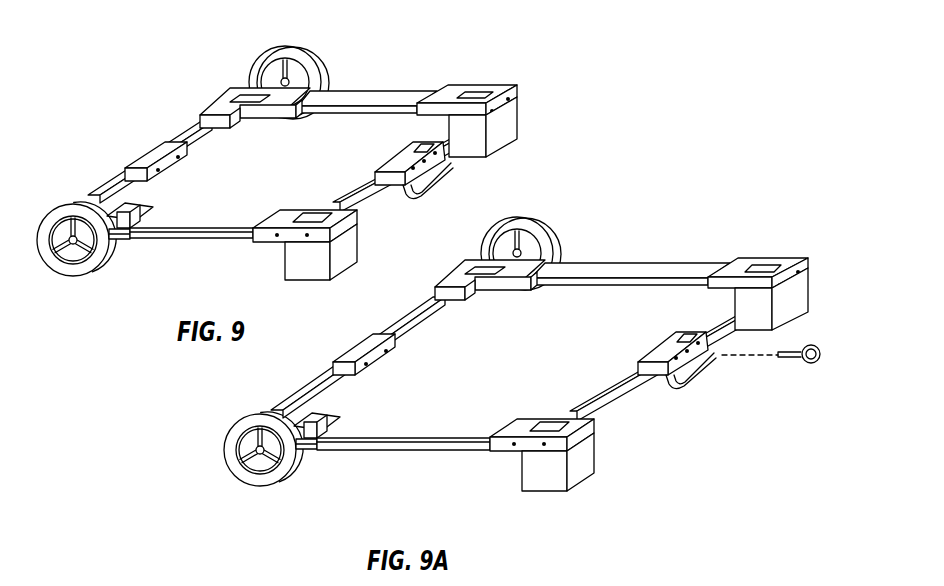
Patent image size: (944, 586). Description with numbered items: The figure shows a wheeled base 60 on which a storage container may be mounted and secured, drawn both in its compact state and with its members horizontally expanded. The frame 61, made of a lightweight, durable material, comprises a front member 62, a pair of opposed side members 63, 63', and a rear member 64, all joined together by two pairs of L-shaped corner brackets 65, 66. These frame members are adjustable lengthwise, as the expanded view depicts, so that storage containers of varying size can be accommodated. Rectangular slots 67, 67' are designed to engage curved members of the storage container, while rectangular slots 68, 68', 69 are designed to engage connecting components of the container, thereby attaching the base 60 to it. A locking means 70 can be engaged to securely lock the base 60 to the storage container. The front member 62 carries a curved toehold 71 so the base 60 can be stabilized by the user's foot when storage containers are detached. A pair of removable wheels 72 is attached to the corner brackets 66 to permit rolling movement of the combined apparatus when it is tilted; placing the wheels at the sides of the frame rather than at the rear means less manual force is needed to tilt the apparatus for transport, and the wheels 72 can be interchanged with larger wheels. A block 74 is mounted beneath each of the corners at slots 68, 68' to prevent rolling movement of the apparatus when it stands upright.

In FIG. 9, the wheeled base 60 is at (160, 118).
In FIG. 9, the frame 61 is at (343, 78).
In FIG. 9, the front member 62 is at (367, 190).
In FIG. 9, the side member 63 is at (191, 208).
In FIG. 9, the side member 63' is at (369, 83).
In FIG. 9, the rear member 64 is at (127, 181).
In FIG. 9, the L-shaped corner bracket 65 is at (497, 87).
In FIG. 9, the L-shaped corner bracket 66 is at (241, 83).
In FIG. 9A, the rectangular slot 67 is at (331, 391).
In FIG. 9A, the rectangular slot 67' is at (568, 258).
In FIG. 9A, the rectangular slot 68 is at (537, 416).
In FIG. 9A, the rectangular slot 68' is at (752, 253).
In FIG. 9A, the rectangular slot 69 is at (670, 342).
In FIG. 9A, the locking means 70 is at (813, 375).
In FIG. 9A, the curved toehold 71 is at (697, 363).
In FIG. 9, the removable wheel 72 is at (305, 52).
In FIG. 9A, the block 74 is at (795, 302).